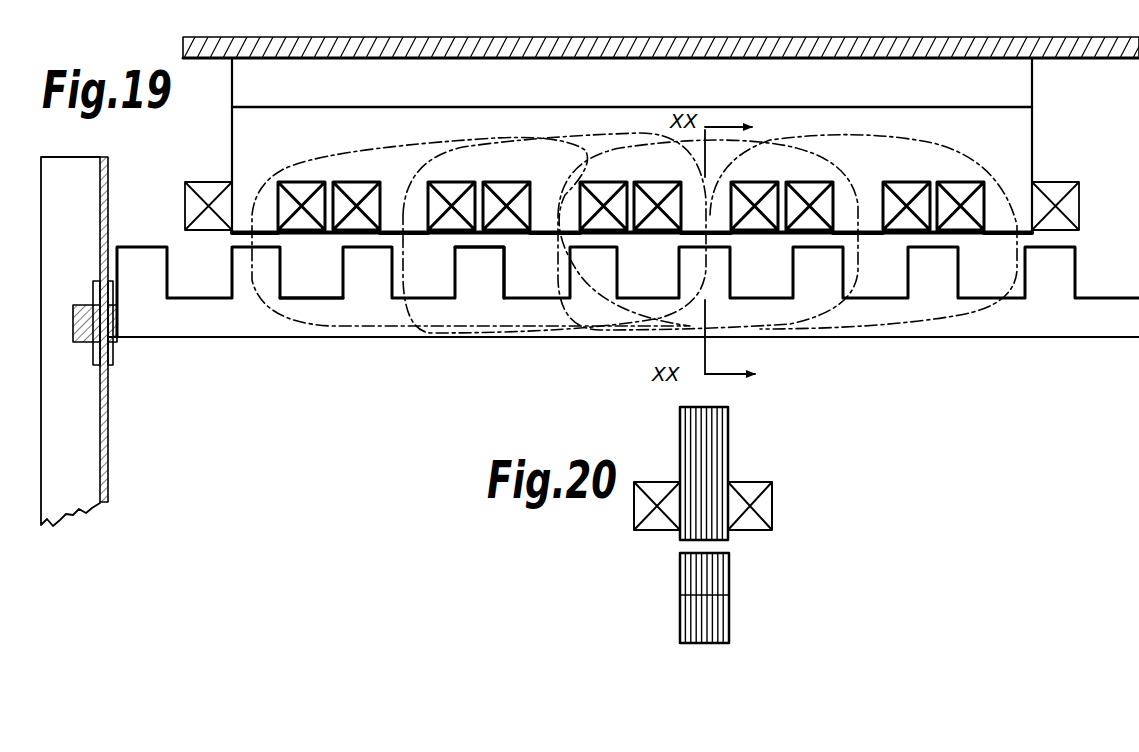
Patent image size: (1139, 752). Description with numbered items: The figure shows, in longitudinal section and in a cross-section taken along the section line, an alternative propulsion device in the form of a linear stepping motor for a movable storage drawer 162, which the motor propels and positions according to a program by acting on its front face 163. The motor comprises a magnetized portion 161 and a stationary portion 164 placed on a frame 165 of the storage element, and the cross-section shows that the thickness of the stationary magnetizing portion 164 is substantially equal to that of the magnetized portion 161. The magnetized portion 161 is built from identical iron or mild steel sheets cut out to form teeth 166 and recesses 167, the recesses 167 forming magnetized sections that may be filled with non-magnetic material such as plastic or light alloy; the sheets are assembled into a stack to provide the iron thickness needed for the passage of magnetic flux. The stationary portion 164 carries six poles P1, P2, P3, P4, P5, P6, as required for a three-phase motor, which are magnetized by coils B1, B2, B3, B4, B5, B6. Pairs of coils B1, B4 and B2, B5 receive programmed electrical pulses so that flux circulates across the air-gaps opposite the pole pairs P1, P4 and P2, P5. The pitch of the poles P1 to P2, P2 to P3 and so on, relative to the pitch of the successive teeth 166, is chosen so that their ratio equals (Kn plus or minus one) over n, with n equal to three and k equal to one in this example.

In FIG. 19, the magnetized portion 161 is at (997, 342).
In FIG. 20, the magnetized portion 161 is at (733, 588).
In FIG. 19, the drawer 162 is at (80, 512).
In FIG. 19, the front face 163 is at (112, 457).
In FIG. 19, the stationary portion 164 is at (1036, 120).
In FIG. 20, the stationary portion 164 is at (732, 455).
In FIG. 19, the frame 165 is at (1024, 31).
In FIG. 19, the teeth 166 is at (477, 290).
In FIG. 19, the recesses 167 is at (312, 290).
In FIG. 19, the coil B1 is at (185, 218).
In FIG. 19, the coil B2 is at (352, 195).
In FIG. 19, the coil B3 is at (508, 190).
In FIG. 19, the coil B4 is at (658, 222).
In FIG. 19, the coil B5 is at (803, 218).
In FIG. 19, the coil B6 is at (957, 187).
In FIG. 19, the pole P1 is at (232, 237).
In FIG. 19, the pole P2 is at (402, 234).
In FIG. 19, the pole P3 is at (545, 226).
In FIG. 19, the pole P4 is at (682, 238).
In FIG. 19, the pole P5 is at (858, 234).
In FIG. 19, the pole P6 is at (1030, 225).